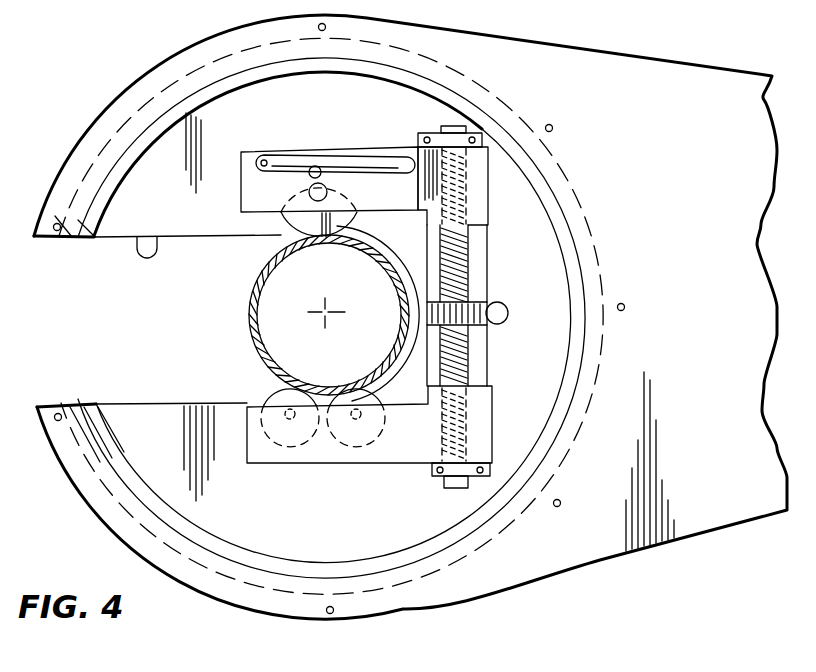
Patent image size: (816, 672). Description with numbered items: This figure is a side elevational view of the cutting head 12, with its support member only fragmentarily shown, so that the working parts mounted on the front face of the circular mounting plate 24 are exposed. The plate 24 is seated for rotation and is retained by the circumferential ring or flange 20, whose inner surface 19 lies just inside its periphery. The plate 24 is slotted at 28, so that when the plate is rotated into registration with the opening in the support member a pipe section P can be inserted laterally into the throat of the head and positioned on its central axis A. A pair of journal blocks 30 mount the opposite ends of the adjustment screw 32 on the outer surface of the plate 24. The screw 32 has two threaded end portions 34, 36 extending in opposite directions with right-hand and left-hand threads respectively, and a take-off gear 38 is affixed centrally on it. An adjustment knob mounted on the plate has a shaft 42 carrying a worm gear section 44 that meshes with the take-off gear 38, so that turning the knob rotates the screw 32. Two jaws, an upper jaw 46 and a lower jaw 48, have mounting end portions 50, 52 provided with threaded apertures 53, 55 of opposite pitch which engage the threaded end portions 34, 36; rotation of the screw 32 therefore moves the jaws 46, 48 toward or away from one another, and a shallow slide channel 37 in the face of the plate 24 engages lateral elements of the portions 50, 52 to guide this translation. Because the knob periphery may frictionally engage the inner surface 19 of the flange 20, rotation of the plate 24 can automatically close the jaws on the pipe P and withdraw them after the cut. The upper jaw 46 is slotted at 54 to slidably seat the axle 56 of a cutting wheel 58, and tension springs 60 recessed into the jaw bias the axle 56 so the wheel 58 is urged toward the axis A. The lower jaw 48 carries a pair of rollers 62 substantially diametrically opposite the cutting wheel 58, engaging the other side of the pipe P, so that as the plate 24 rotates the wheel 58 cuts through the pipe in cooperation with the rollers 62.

The cutting head 12 is at (96, 110).
The inner surface of the flange 19 is at (112, 438).
The circumferential ring or flange 20 is at (563, 444).
The circular mounting plate 24 is at (210, 508).
The slot of the mounting plate 28 is at (160, 236).
The journal blocks 30 is at (432, 138).
The adjustment screw 32 is at (470, 280).
The threaded end portion 34 is at (452, 254).
The threaded end portion 36 is at (468, 352).
The slide channel 37 is at (480, 251).
The take-off gear 38 is at (429, 322).
The shaft 42 is at (490, 325).
The worm gear section 44 is at (509, 312).
The upper jaw 46 is at (249, 152).
The lower jaw 48 is at (268, 452).
The mounting end portion 50 is at (476, 173).
The mounting end portion 52 is at (488, 426).
The threaded aperture 53 is at (474, 188).
The slot 54 is at (315, 166).
The threaded aperture 55 is at (445, 425).
The axle 56 is at (327, 192).
The cutting wheel 58 is at (283, 236).
The tension springs 60 is at (371, 160).
The rollers 62 is at (339, 390).
The pipe section P is at (248, 307).
The central axis A is at (323, 300).